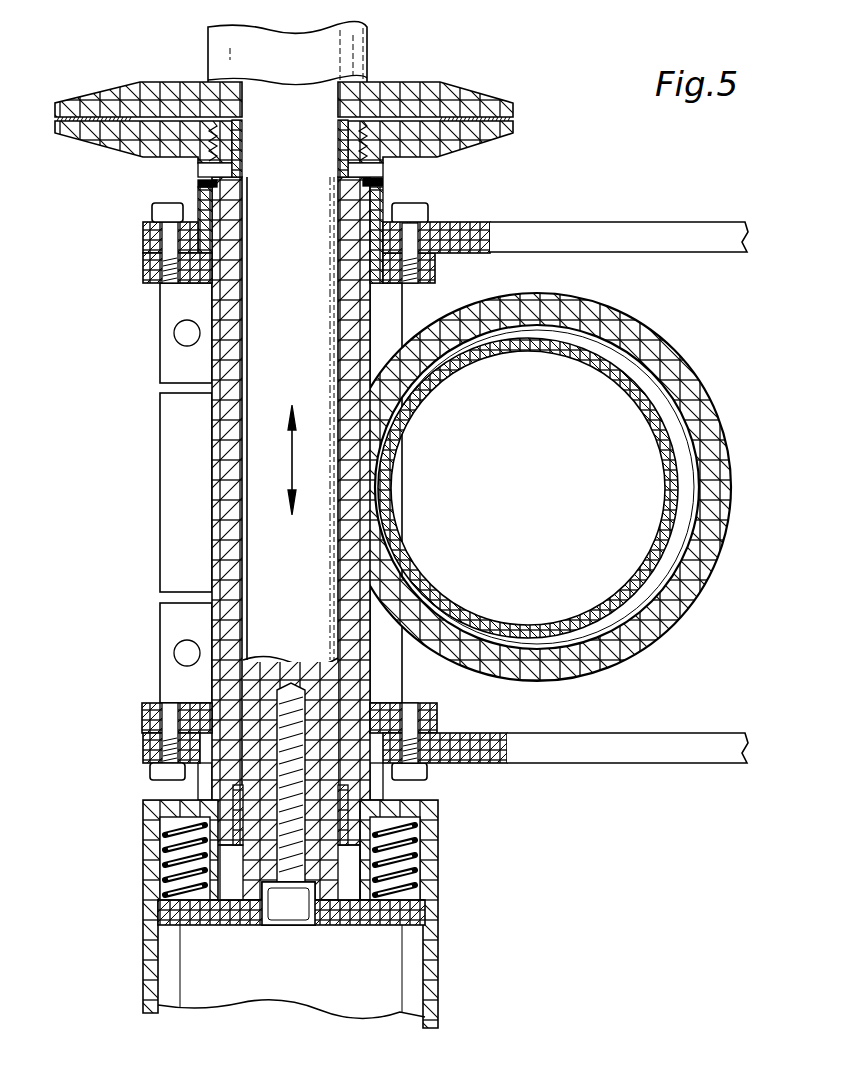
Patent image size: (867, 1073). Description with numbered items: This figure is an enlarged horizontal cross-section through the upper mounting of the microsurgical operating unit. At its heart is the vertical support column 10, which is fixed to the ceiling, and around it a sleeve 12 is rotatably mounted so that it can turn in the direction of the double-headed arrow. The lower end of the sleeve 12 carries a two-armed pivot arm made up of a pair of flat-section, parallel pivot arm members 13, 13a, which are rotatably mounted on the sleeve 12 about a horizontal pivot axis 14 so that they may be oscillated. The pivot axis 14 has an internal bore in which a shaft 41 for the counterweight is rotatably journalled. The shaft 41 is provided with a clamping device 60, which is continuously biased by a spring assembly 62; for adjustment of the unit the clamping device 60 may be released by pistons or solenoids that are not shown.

The vertical support column 10 is at (670, 413).
The sleeve 12 is at (707, 460).
The pivot arm member 13 is at (627, 757).
The pivot arm member 13a is at (620, 227).
The horizontal pivot axis 14 is at (227, 513).
The shaft 41 is at (257, 338).
The clamping device 60 is at (489, 105).
The spring assembly 62 is at (157, 873).